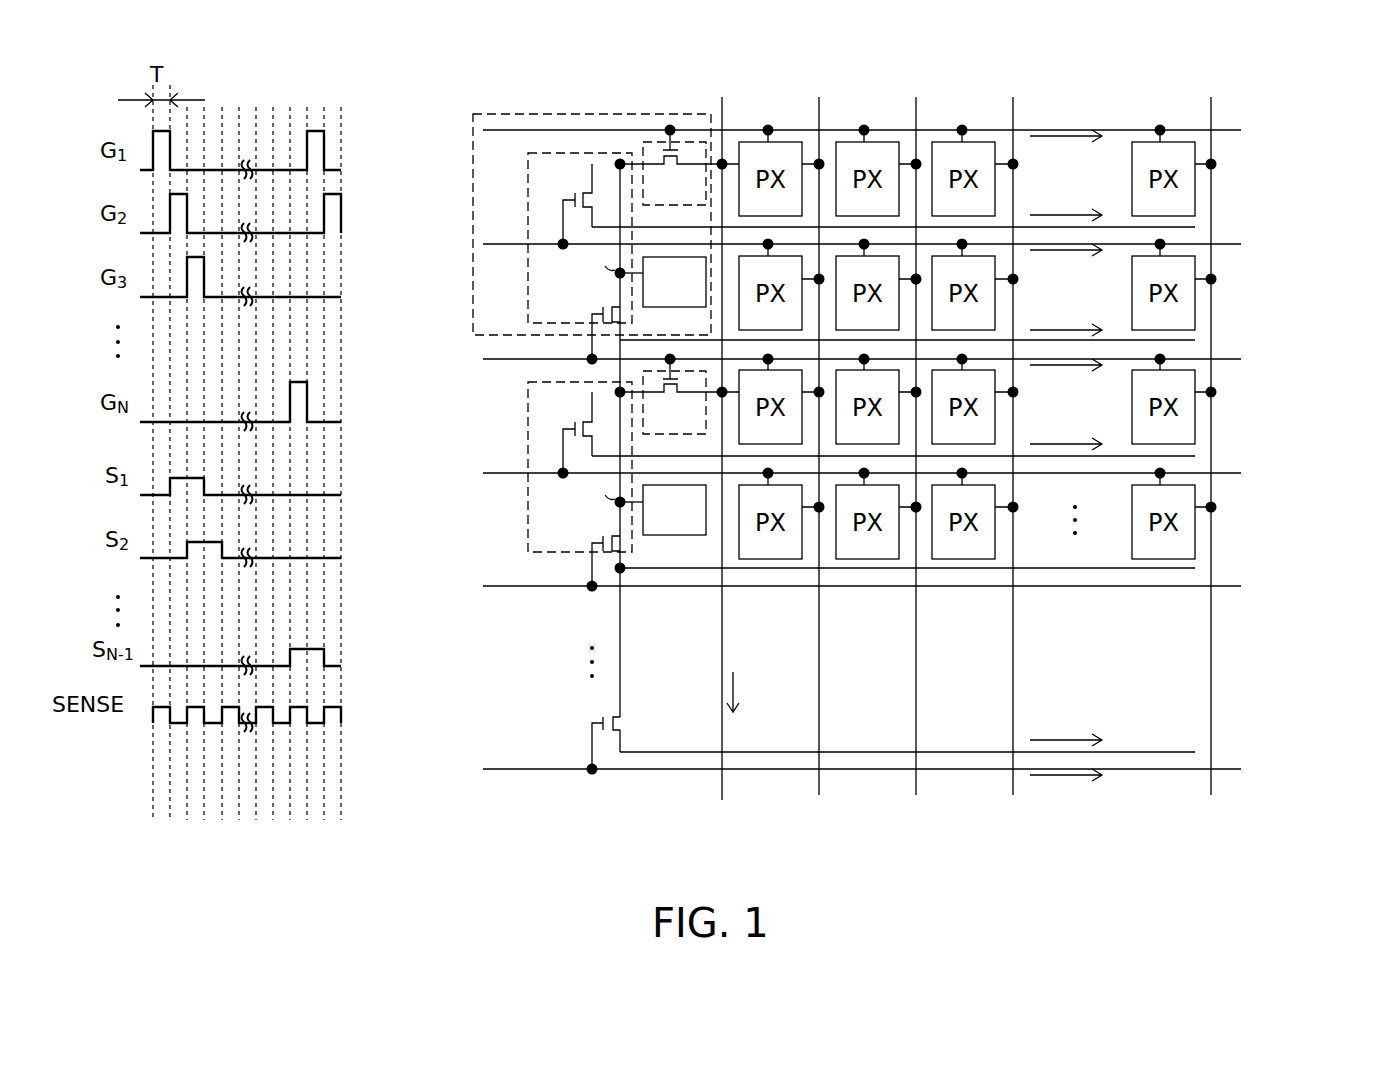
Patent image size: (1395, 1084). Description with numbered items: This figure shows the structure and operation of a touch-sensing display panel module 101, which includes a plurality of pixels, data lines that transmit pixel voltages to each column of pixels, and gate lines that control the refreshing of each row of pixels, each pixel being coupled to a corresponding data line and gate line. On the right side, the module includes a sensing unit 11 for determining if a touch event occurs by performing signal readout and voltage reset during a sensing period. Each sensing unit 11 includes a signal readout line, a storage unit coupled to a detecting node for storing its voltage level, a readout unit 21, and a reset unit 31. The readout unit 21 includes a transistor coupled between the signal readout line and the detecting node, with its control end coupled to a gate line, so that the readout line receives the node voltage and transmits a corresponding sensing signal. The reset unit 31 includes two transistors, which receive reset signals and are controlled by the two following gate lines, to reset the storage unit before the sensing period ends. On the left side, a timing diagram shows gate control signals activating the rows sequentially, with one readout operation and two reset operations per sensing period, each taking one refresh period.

The touch-sensing display panel module 101 is at (1306, 98).
The sensing unit 11 is at (610, 113).
The readout unit 21 is at (643, 150).
The reset unit 31 is at (528, 222).